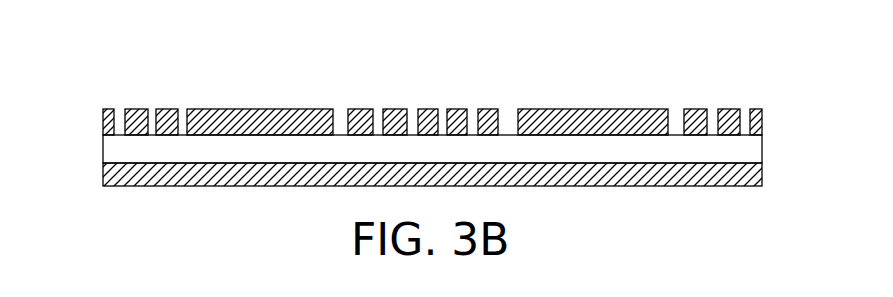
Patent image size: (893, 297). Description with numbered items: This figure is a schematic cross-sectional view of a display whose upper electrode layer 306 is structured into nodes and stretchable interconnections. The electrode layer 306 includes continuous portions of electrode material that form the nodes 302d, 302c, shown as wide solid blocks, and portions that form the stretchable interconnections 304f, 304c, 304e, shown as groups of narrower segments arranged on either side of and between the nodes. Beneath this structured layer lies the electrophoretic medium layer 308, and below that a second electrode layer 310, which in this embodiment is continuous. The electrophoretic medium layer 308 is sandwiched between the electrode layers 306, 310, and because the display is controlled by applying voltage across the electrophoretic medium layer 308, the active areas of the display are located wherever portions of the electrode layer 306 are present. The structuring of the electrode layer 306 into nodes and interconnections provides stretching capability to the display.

The electrode layer 306 is at (103, 115).
The electrophoretic medium layer 308 is at (110, 150).
The electrode layer 310 is at (104, 184).
The stretchable interconnection 304f is at (181, 108).
The node 302d is at (333, 108).
The stretchable interconnection 304c is at (517, 108).
The node 302c is at (663, 108).
The stretchable interconnection 304e is at (763, 108).